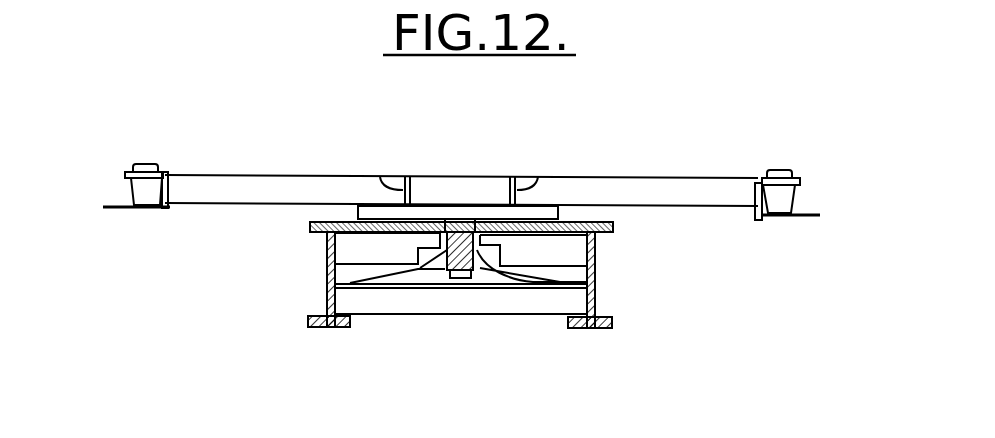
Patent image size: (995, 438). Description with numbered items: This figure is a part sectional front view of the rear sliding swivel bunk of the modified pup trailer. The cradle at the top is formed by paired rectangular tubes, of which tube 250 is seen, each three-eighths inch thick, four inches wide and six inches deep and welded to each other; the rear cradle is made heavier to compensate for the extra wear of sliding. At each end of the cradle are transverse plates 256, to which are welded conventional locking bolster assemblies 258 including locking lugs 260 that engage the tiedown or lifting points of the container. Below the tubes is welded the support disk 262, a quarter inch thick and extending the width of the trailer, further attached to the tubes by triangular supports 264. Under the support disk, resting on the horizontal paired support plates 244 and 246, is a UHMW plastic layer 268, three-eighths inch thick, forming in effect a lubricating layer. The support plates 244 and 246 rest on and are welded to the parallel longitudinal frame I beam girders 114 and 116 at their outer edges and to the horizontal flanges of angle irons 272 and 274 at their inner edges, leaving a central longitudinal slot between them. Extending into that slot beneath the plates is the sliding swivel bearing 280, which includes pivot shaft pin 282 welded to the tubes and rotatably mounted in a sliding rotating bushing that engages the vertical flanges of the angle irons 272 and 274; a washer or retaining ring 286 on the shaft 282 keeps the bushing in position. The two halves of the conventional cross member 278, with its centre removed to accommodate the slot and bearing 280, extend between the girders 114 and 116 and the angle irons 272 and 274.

The longitudinal frame I beam girder 114 is at (308, 313).
The longitudinal frame I beam girder 116 is at (605, 313).
The support plate 244 is at (357, 207).
The support plate 246 is at (614, 226).
The rectangular tube 250 is at (633, 195).
The transverse plate 256 is at (168, 190).
The locking bolster assembly 258 is at (130, 187).
The locking lug 260 is at (143, 164).
The support disk 262 is at (464, 206).
The triangular support 264 is at (380, 176).
The UHMW plastic layer 268 is at (312, 229).
The angle iron 272 is at (337, 285).
The angle iron 274 is at (596, 288).
The cross member 278 is at (461, 249).
The sliding swivel bearing 280 is at (461, 291).
The pivot shaft pin 282 is at (478, 278).
The retaining ring 286 is at (431, 278).